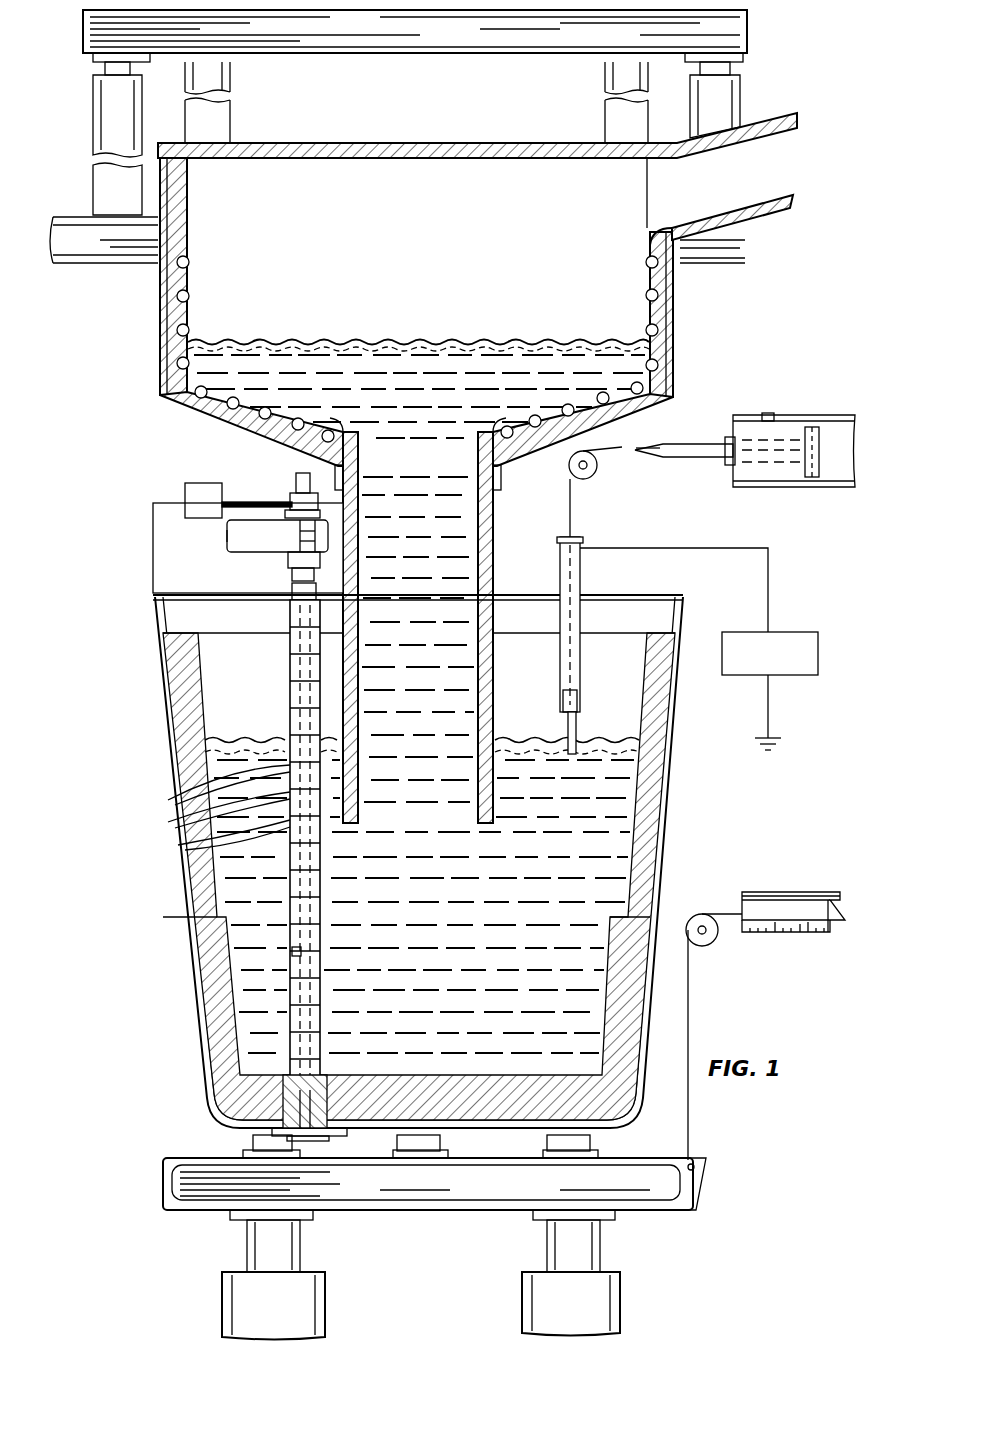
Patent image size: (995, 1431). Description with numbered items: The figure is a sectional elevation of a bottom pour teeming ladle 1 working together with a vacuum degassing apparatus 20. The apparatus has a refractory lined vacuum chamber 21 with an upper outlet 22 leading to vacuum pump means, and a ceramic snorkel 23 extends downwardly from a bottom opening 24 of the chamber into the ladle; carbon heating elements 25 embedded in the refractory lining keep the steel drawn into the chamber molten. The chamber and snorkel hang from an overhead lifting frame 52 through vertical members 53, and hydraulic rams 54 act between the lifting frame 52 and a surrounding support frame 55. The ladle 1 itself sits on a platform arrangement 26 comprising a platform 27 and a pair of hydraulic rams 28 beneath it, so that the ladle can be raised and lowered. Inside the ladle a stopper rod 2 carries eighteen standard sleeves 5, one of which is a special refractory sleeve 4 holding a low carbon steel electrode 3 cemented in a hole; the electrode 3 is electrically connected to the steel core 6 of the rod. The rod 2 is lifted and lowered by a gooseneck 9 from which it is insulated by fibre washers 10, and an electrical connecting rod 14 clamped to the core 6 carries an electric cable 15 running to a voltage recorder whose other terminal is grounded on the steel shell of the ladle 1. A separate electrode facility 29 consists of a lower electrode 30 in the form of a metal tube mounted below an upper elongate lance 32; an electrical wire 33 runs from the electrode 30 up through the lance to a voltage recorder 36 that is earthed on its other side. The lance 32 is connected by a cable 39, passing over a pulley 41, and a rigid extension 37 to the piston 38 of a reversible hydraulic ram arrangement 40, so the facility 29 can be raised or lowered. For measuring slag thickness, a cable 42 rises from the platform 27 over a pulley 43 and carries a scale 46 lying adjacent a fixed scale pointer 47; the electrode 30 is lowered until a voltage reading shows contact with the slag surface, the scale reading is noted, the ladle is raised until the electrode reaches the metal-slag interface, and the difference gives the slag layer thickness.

The teeming ladle 1 is at (664, 840).
The stopper rod 2 is at (287, 668).
The electrode 3 is at (297, 954).
The refractory sleeve 4 is at (297, 950).
The standard sleeves 5 is at (218, 807).
The steel core 6 is at (290, 577).
The gooseneck 9 is at (224, 536).
The fibre washers 10 is at (282, 552).
The electrical connecting rod 14 is at (268, 499).
The electric cable 15 is at (154, 503).
The vacuum degassing apparatus 20 is at (680, 318).
The vacuum chamber 21 is at (478, 283).
The upper outlet 22 is at (750, 173).
The snorkel 23 is at (487, 582).
The bottom opening 24 is at (483, 476).
The carbon heating elements 25 is at (292, 424).
The platform arrangement 26 is at (617, 1223).
The platform 27 is at (430, 1204).
The hydraulic rams 28 is at (314, 1321).
The electrode facility 29 is at (585, 598).
The lower electrode 30 is at (577, 727).
The upper elongate lance 32 is at (581, 661).
The electrical wire 33 is at (700, 548).
The voltage recorder 36 is at (782, 669).
The rigid extension 37 is at (708, 427).
The piston 38 is at (815, 413).
The cable 39 is at (572, 524).
The reversible hydraulic ram arrangement 40 is at (768, 412).
The pulley 41 is at (594, 478).
The cable 42 is at (690, 1128).
The pulley 43 is at (702, 947).
The scale 46 is at (785, 944).
The scale pointer 47 is at (810, 892).
The overhead lifting frame 52 is at (456, 52).
The vertical members 53 is at (222, 82).
The hydraulic rams 54 is at (112, 108).
The support frame 55 is at (130, 268).